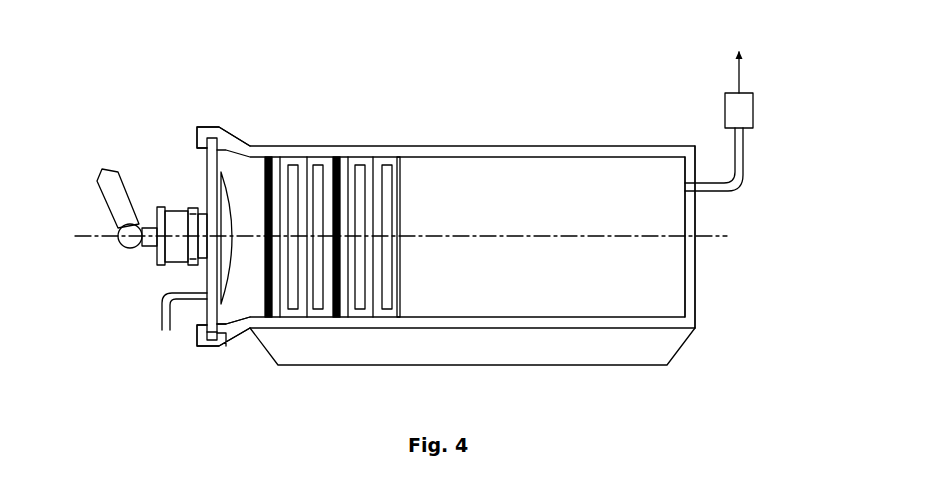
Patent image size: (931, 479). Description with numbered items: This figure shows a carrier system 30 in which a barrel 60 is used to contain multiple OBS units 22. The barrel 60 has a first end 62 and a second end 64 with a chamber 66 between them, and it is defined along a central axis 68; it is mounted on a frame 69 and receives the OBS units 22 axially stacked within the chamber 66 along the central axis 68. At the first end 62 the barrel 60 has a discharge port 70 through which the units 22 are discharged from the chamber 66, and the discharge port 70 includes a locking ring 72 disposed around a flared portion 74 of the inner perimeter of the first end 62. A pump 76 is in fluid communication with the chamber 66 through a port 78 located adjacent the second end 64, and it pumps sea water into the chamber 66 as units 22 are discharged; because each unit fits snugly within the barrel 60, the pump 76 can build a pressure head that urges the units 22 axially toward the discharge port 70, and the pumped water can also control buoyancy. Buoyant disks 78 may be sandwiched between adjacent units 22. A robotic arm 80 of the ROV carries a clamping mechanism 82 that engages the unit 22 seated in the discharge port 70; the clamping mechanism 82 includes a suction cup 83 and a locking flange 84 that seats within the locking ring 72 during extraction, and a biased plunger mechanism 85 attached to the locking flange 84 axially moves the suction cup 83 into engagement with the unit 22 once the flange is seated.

The apparatus 30 is at (453, 118).
The barrel 60 is at (479, 143).
The first end 62 is at (232, 127).
The second end 64 is at (681, 143).
The chamber 66 is at (553, 200).
The central axis 68 is at (703, 240).
The frame 69 is at (660, 343).
The discharge port 70 is at (187, 331).
The locking ring 72 is at (210, 150).
The flared portion 74 is at (230, 344).
The pump 76 is at (725, 108).
The port 78 is at (334, 157).
The robotic arm 80 is at (105, 198).
The clamping mechanism 82 is at (166, 194).
The suction cup 83 is at (230, 197).
The locking flange 84 is at (215, 334).
The biased plunger mechanism 85 is at (160, 267).
The OBS unit 22 is at (303, 304).